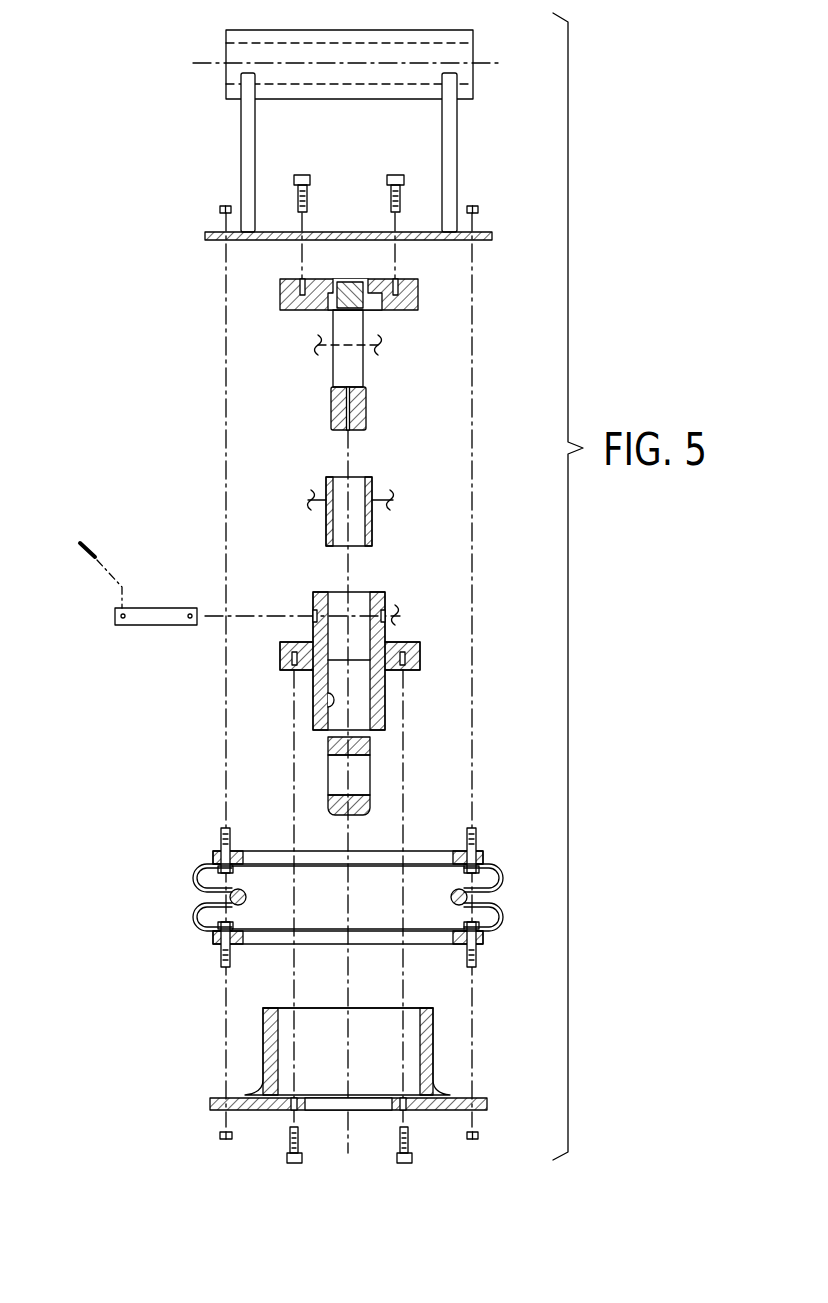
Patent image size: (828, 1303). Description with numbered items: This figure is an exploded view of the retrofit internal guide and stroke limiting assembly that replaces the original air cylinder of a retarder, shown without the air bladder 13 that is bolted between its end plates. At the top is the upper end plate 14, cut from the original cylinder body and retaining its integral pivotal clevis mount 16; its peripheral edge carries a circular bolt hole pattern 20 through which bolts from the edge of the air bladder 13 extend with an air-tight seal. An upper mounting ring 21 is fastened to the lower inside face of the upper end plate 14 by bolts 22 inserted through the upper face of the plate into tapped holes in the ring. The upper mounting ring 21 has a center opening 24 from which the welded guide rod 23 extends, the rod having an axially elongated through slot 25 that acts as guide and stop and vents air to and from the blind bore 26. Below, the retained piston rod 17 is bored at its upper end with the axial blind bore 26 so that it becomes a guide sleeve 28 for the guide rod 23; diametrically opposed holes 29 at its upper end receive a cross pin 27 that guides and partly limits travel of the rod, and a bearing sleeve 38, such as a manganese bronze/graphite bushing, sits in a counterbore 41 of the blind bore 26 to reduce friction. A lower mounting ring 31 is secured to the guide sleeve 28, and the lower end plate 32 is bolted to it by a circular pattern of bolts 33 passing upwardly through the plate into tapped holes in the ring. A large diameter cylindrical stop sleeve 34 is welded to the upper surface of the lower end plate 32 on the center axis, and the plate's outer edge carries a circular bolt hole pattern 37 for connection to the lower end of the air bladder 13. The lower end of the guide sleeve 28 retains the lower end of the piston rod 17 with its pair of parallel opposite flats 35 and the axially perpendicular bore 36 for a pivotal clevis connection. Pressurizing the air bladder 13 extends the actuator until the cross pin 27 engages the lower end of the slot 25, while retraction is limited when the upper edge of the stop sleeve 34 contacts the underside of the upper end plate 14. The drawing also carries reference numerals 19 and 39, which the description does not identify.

The air bladder 13 is at (498, 865).
The upper end plate 14 is at (270, 238).
The pivotal clevis mount 16 is at (386, 50).
The piston rod 17 is at (350, 686).
The end plates 19 is at (272, 857).
The circular bolt hole pattern 20 is at (224, 232).
The upper mounting ring 21 is at (420, 290).
The bolts 22 is at (397, 197).
The guide rod 23 is at (368, 403).
The center opening 24 is at (323, 297).
The through slot 25 is at (340, 367).
The blind bore 26 is at (330, 708).
The cross pin 27 is at (160, 613).
The guide sleeve 28 is at (350, 656).
The diametrically opposed holes 29 is at (380, 613).
The lower mounting ring 31 is at (420, 658).
The lower end plate 32 is at (437, 1112).
The bolts 33 is at (395, 1143).
The stop sleeve 34 is at (324, 1034).
The flats 35 is at (328, 742).
The bore 36 is at (358, 793).
The circular bolt hole pattern 37 is at (473, 1097).
The bearing sleeve 38 is at (372, 522).
The cup rim 39 is at (268, 1008).
The counterbore 41 is at (337, 592).